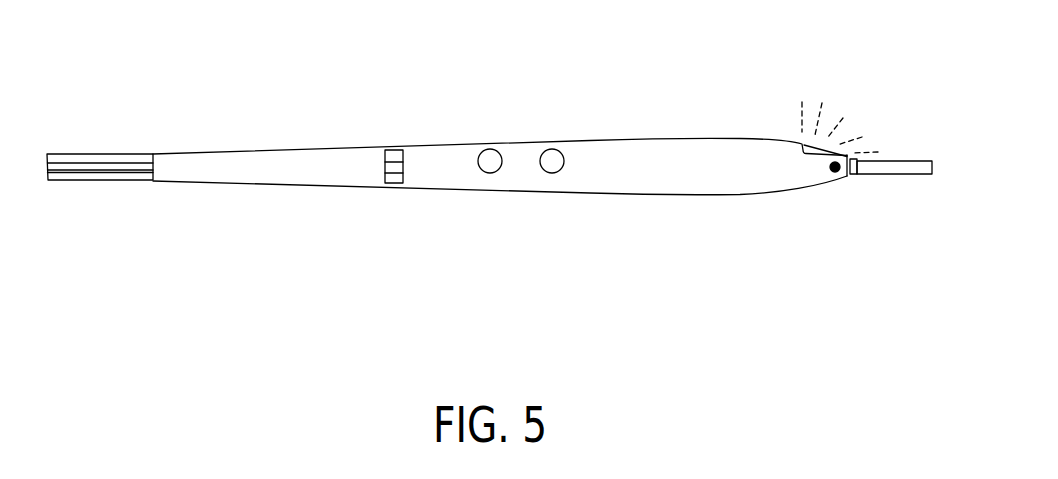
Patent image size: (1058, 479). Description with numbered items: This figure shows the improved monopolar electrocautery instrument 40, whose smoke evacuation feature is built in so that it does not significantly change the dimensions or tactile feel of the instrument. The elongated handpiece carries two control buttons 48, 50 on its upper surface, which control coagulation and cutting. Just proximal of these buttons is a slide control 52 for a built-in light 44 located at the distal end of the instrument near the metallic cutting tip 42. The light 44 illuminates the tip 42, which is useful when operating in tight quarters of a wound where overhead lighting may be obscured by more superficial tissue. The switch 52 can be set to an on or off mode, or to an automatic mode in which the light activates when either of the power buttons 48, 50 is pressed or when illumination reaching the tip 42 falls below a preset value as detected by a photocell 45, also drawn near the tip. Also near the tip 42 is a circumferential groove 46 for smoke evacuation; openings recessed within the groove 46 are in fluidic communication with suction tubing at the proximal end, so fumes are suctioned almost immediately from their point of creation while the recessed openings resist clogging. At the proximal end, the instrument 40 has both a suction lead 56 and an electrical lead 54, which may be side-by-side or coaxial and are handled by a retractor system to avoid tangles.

The monopolar instrument 40 is at (736, 296).
The metallic cutting tip 42 is at (926, 159).
The light 44 is at (814, 143).
The photocell 45 is at (838, 175).
The circumferential groove 46 is at (850, 176).
The control button 48 is at (490, 149).
The control button 50 is at (550, 149).
The slide control 52 is at (393, 149).
The electrical lead 54 is at (85, 168).
The suction lead 56 is at (128, 160).